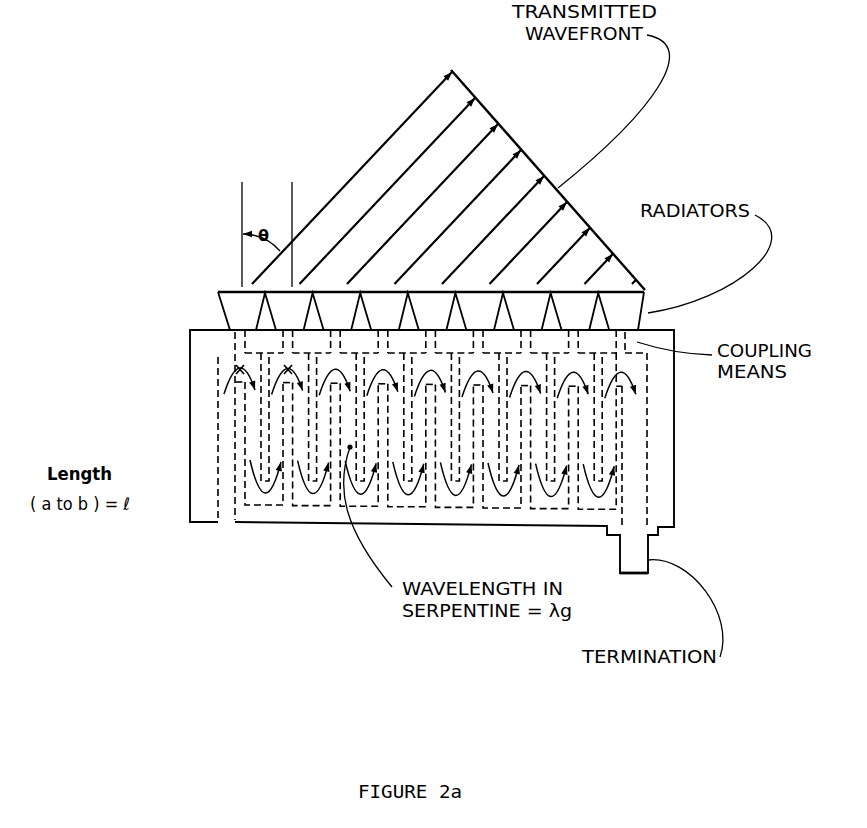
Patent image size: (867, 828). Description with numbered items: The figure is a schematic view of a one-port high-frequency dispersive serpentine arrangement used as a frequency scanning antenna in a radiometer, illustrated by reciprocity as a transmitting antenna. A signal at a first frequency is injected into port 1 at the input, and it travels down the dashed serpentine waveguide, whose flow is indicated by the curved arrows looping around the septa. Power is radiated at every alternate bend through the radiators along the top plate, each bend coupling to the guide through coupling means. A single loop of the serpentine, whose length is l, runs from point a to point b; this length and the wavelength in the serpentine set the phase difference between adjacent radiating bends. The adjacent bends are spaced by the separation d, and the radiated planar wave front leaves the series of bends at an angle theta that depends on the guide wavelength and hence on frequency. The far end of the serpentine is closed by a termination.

The point a is at (240, 369).
The point b is at (288, 371).
The port one 1 is at (227, 512).
The separation between adjacent bends d is at (334, 188).